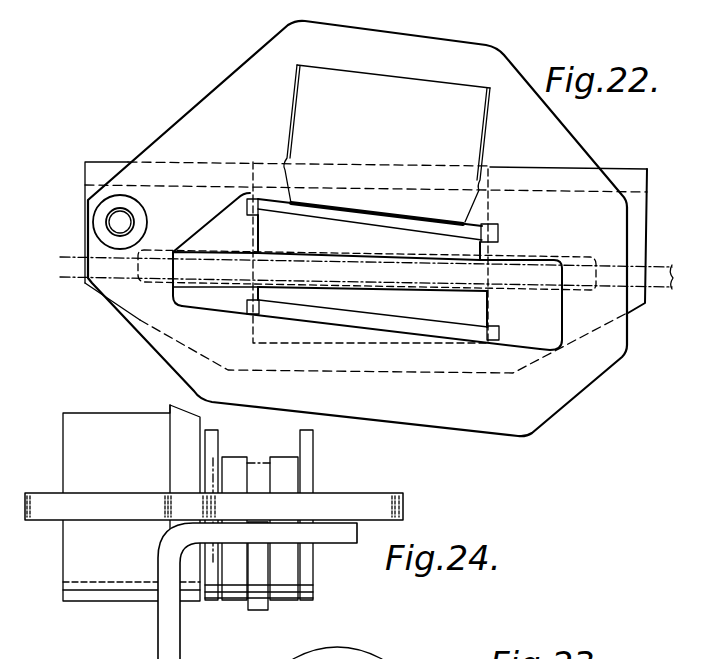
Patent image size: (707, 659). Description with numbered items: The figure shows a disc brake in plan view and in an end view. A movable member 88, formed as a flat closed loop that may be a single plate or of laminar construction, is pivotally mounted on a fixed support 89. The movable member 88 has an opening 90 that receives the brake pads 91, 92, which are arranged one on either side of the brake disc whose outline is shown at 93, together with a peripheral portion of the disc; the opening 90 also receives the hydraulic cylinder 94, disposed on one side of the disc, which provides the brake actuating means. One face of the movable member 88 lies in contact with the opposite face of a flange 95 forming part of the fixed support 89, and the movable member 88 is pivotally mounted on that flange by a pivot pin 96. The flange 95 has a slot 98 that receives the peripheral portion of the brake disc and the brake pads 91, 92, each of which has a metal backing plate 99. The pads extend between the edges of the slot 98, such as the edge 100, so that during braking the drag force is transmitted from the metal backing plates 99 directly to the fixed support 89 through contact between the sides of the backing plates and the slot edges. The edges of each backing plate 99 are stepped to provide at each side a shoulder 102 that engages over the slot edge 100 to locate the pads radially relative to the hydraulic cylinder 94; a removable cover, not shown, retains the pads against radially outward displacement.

In FIG. 22, the movable member 88 is at (213, 122).
In FIG. 24, the movable member 88 is at (357, 501).
In FIG. 24, the fixed support 89 is at (163, 642).
In FIG. 22, the opening 90 is at (570, 310).
In FIG. 22, the brake pad 91 is at (322, 240).
In FIG. 24, the brake pad 91 is at (233, 470).
In FIG. 22, the brake pad 92 is at (466, 300).
In FIG. 24, the brake pad 92 is at (283, 470).
In FIG. 22, the brake disc outline 93 is at (175, 295).
In FIG. 24, the brake disc outline 93 is at (248, 608).
In FIG. 22, the hydraulic cylinder 94 is at (452, 105).
In FIG. 24, the hydraulic cylinder 94 is at (110, 440).
In FIG. 22, the flange 95 is at (110, 292).
In FIG. 24, the flange 95 is at (307, 535).
In FIG. 22, the pivot pin 96 is at (130, 224).
In FIG. 24, the pivot pin 96 is at (205, 467).
In FIG. 22, the slot 98 is at (220, 283).
In FIG. 22, the metal backing plate 99 is at (404, 225).
In FIG. 24, the metal backing plate 99 is at (305, 432).
In FIG. 22, the slot edge 100 is at (257, 242).
In FIG. 22, the shoulder 102 is at (246, 201).